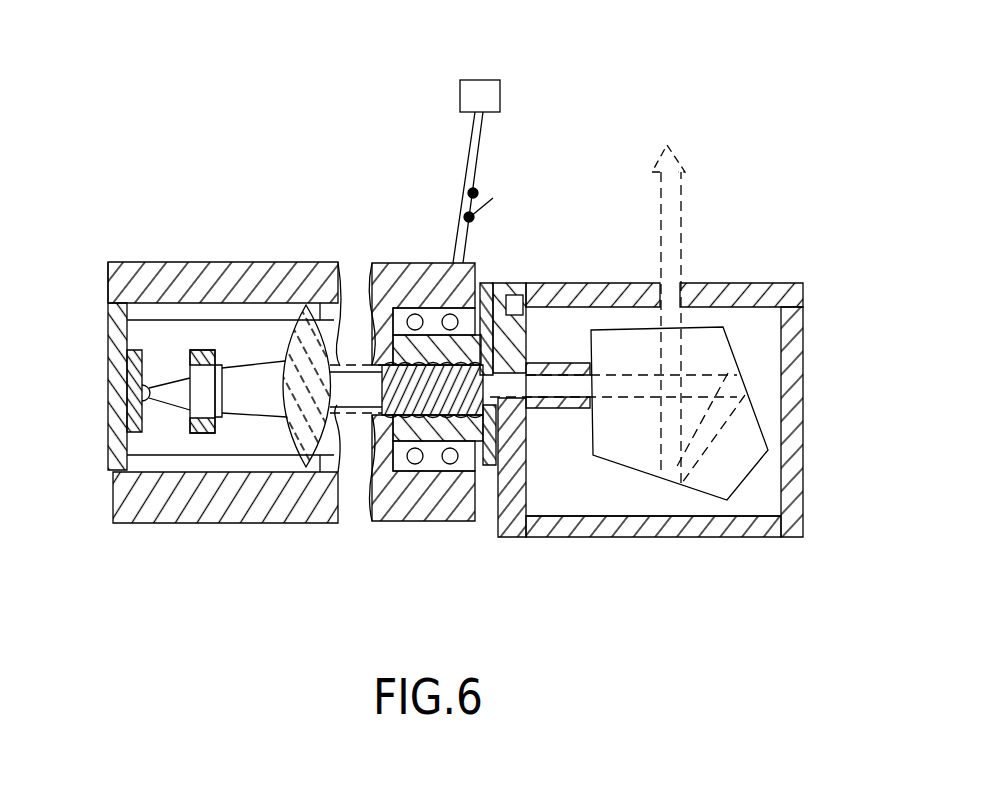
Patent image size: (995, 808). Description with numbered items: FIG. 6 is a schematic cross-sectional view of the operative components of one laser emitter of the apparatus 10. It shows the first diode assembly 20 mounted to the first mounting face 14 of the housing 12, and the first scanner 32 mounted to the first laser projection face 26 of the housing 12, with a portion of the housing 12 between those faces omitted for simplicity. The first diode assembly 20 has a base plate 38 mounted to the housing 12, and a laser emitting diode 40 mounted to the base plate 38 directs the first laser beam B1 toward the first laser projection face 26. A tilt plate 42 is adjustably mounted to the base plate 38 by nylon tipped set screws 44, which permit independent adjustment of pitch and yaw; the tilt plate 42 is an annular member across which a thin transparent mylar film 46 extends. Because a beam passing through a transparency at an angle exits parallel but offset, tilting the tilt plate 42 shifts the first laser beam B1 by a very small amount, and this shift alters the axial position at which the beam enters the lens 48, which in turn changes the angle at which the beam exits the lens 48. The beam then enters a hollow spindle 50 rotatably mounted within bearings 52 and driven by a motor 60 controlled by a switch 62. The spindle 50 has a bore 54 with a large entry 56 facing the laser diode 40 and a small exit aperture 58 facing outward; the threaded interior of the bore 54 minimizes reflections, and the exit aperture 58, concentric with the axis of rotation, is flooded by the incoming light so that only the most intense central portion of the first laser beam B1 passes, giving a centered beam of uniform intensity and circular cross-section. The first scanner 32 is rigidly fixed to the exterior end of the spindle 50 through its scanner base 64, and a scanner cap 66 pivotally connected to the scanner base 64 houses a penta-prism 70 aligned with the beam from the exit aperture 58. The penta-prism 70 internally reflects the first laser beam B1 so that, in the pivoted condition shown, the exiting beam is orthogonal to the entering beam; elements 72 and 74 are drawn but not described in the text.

The apparatus 10 is at (114, 236).
The housing 12 is at (195, 265).
The first mounting face 14 is at (108, 287).
The first diode assembly 20 is at (109, 410).
The first laser projection face 26 is at (483, 283).
The first scanner 32 is at (800, 283).
The base plate 38 is at (108, 463).
The laser emitting diode 40 is at (127, 352).
The tilt plate 42 is at (205, 434).
The set screws 44 is at (153, 445).
The mylar film 46 is at (223, 400).
The lens 48 is at (292, 306).
The spindle 50 is at (391, 352).
The bearings 52 is at (445, 308).
The bore 54 is at (395, 340).
The entry 56 is at (390, 416).
The exit aperture 58 is at (482, 372).
The motor 60 is at (460, 100).
The switch 62 is at (478, 190).
The scanner base 64 is at (510, 528).
The scanner cap 66 is at (738, 525).
The penta-prism 70 is at (748, 473).
The set screw 72 is at (512, 314).
The beam opening 74 is at (527, 364).
The first laser beam B1 is at (162, 378).